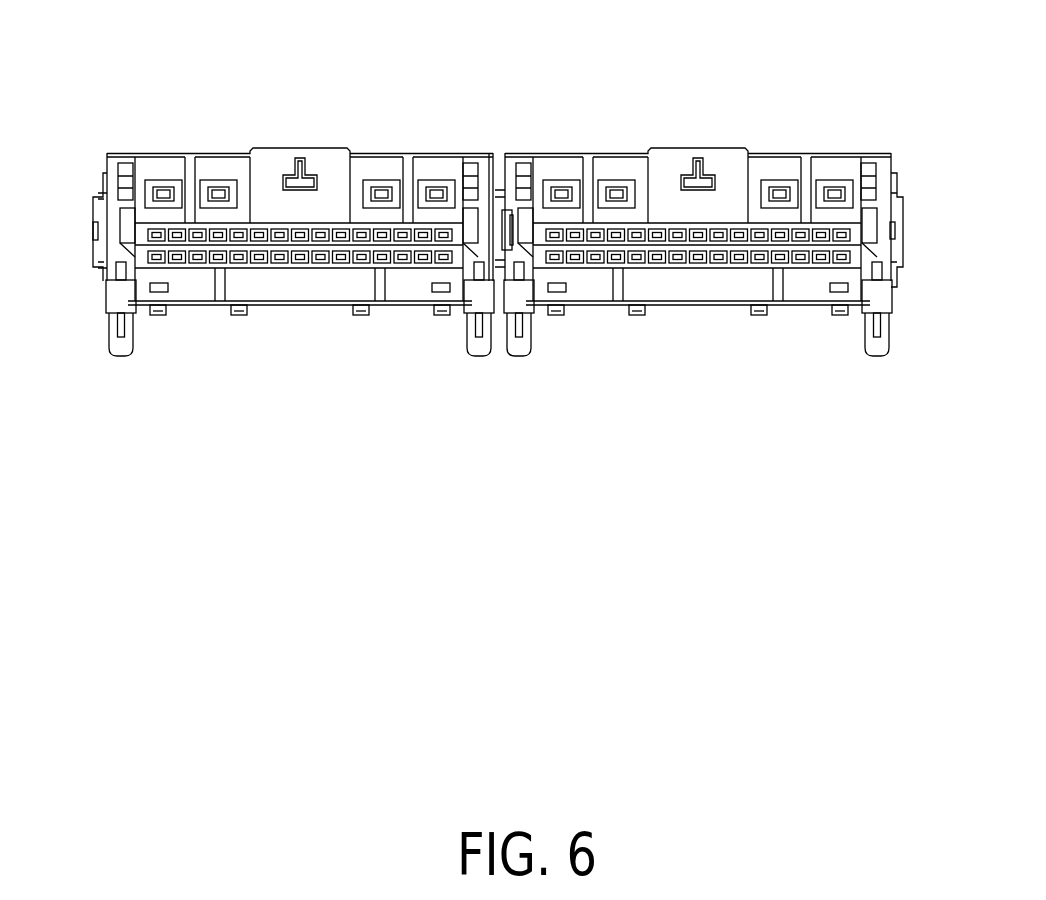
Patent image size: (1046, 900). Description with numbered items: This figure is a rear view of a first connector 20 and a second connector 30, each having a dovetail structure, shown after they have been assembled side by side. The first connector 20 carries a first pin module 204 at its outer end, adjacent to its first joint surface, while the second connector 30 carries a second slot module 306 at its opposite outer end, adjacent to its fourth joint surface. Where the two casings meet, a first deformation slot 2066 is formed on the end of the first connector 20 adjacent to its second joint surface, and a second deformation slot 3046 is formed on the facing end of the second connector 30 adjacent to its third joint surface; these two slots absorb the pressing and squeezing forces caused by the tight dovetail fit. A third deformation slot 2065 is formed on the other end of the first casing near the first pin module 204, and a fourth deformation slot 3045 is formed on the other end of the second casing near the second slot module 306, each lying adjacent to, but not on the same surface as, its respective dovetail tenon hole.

The first connector 20 is at (268, 204).
The second connector 30 is at (727, 204).
The first pin module 204 is at (85, 228).
The third deformation slot 2065 is at (131, 215).
The first deformation slot 2066 is at (472, 229).
The fourth deformation slot 3045 is at (868, 212).
The second deformation slot 3046 is at (507, 232).
The second slot module 306 is at (908, 234).